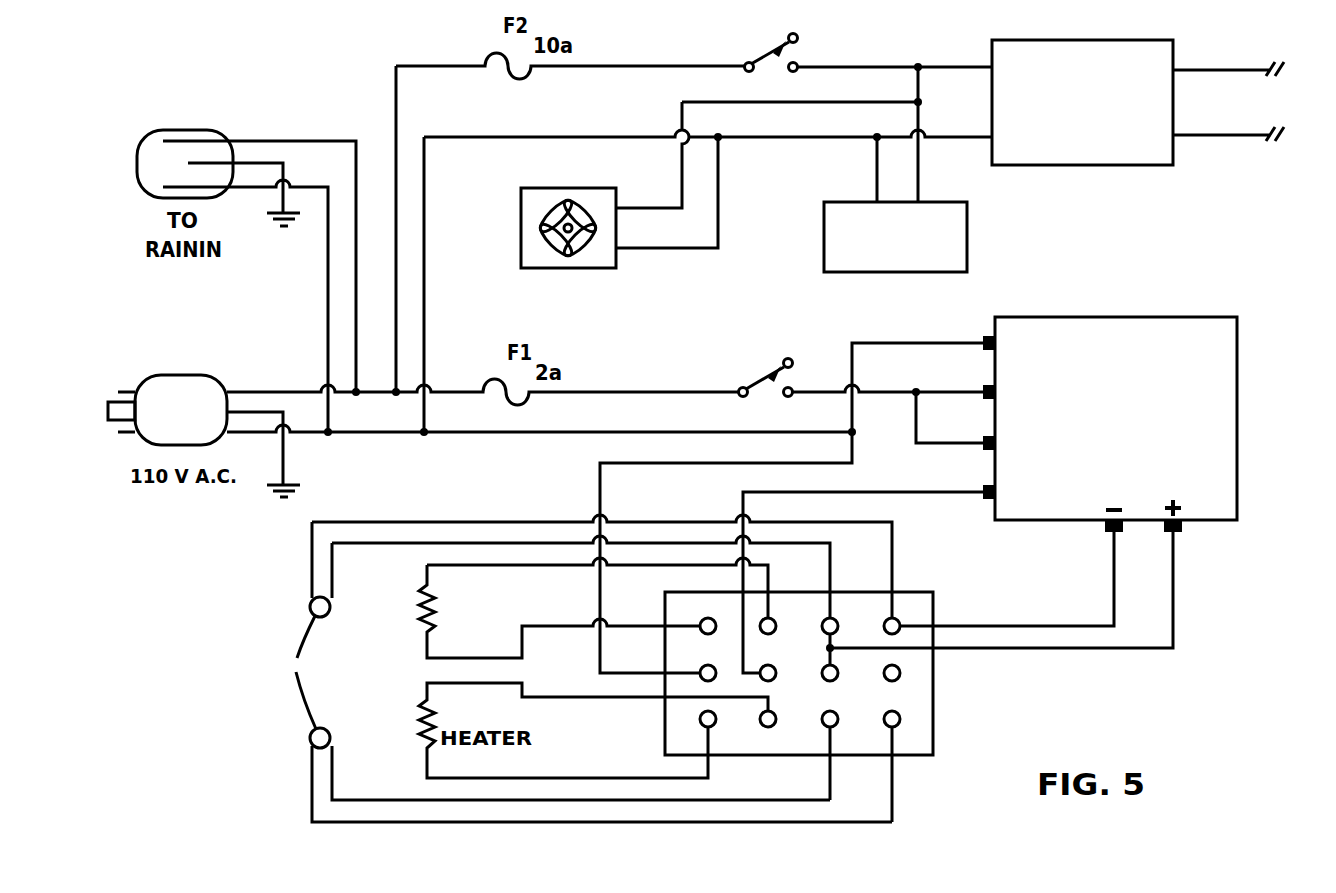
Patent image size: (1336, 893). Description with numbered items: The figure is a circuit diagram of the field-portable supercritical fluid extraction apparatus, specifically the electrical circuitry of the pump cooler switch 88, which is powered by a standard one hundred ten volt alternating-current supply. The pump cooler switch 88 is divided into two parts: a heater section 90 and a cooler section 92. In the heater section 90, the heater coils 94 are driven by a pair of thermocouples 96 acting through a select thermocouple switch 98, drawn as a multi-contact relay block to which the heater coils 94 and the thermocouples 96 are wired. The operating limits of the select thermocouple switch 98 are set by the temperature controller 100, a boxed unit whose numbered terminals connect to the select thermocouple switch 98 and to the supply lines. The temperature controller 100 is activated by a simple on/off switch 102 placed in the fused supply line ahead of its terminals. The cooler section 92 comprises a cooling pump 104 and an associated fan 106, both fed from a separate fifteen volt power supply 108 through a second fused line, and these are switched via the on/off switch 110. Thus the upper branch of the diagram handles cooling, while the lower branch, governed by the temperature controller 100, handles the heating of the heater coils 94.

The pump cooler switch 88 is at (1324, 49).
The heater section 90 is at (1125, 725).
The cooler section 92 is at (1203, 231).
The heater coils 94 is at (420, 632).
The thermocouples 96 is at (296, 672).
The select thermocouple switch 98 is at (927, 600).
The temperature controller 100 is at (1222, 449).
The on/off switch 102 is at (763, 378).
The cooling pump 104 is at (960, 240).
The fan 106 is at (521, 230).
The 15V power supply 108 is at (1025, 42).
The on/off switch 110 is at (767, 56).